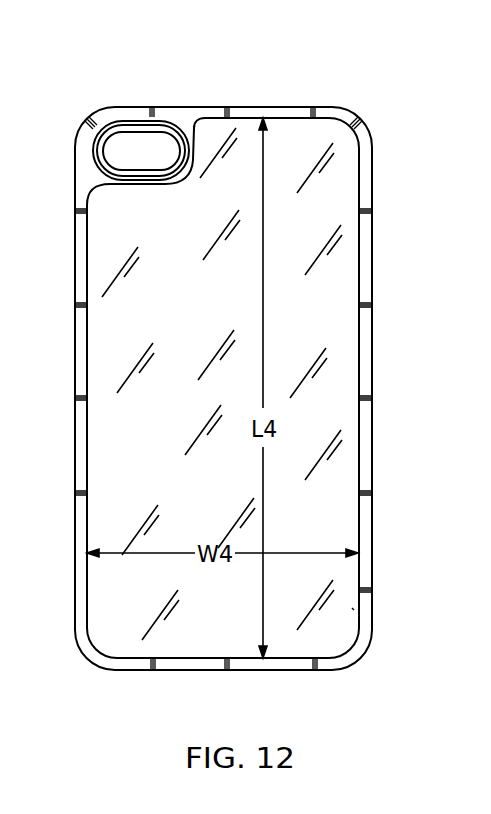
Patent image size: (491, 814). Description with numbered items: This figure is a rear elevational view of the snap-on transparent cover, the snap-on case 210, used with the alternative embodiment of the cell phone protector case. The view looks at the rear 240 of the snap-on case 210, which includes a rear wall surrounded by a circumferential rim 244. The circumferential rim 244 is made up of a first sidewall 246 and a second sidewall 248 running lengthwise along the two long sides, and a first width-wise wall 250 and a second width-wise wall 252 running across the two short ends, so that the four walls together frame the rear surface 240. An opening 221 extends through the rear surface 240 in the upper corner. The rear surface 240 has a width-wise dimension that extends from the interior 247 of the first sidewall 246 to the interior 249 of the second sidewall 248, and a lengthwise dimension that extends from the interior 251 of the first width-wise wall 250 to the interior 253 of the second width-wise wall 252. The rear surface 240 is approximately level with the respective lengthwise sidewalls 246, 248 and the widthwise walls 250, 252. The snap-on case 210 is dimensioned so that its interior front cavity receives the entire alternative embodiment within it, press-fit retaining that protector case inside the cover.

The snap-on case 210 is at (387, 121).
The camera opening 221 is at (125, 143).
The rear 240 is at (332, 270).
The circumferential rim 244 is at (357, 178).
The first sidewall 246 is at (76, 354).
The interior of first sidewall 247 is at (89, 421).
The second sidewall 248 is at (376, 349).
The interior of second sidewall 249 is at (357, 605).
The first width-wise wall 250 is at (237, 112).
The interior of first width-wise wall 251 is at (295, 119).
The second width-wise wall 252 is at (165, 671).
The interior of second width-wise wall 253 is at (301, 652).